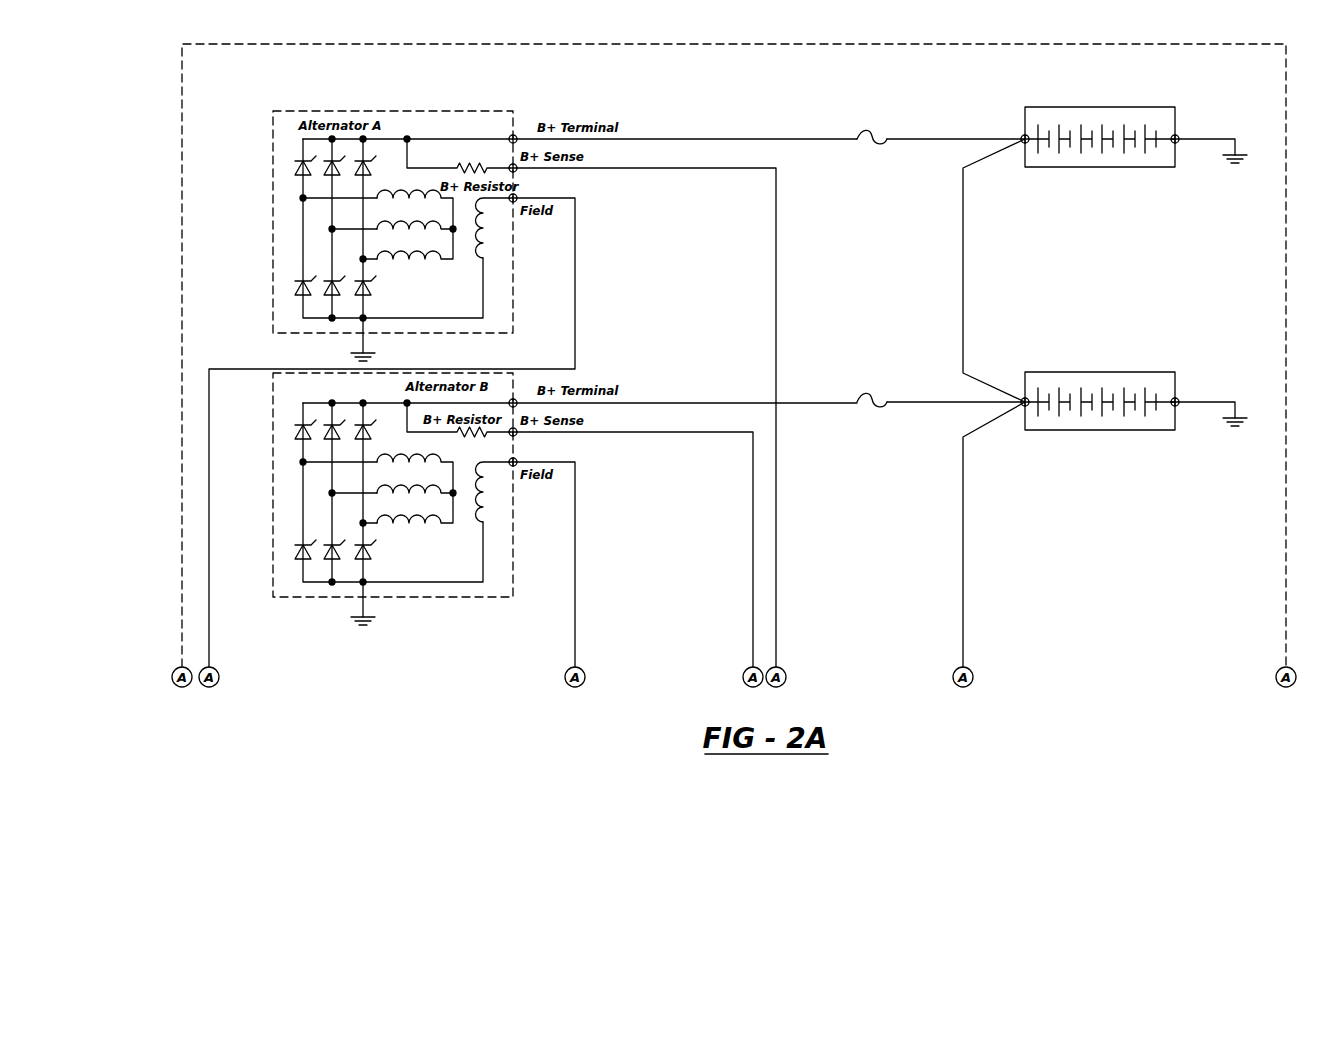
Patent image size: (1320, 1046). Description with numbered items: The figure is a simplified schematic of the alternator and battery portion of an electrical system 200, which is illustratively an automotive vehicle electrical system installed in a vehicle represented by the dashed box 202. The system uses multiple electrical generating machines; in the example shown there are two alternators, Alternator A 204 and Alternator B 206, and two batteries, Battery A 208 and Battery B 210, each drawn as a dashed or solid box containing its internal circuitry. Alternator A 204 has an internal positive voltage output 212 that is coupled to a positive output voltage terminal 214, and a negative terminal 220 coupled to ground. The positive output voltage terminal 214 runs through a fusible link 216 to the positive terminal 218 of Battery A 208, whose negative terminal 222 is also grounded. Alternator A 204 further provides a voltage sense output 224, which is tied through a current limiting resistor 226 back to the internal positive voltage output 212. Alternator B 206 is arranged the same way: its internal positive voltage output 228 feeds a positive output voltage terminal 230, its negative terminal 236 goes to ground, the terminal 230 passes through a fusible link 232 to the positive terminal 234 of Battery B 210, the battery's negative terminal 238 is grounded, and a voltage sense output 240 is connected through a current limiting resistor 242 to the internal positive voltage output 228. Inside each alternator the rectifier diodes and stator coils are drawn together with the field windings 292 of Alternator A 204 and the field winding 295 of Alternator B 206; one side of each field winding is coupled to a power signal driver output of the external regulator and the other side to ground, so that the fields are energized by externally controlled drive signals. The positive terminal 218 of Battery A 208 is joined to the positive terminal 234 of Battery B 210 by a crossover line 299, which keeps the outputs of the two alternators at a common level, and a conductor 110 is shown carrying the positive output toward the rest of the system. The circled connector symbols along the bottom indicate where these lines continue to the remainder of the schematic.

The B+ conductor 110 is at (690, 402).
The electrical system 200 is at (1218, 266).
The dashed box 202 is at (1286, 590).
The Alternator A 204 is at (493, 108).
The Alternator B 206 is at (273, 540).
The Battery A 208 is at (1027, 170).
The Battery B 210 is at (1027, 433).
The internal positive voltage output 212 is at (407, 139).
The positive output voltage terminal 214 is at (517, 137).
The fusible link 216 is at (866, 132).
The positive terminal 218 is at (1021, 137).
The negative terminal 220 is at (363, 320).
The negative terminal 222 is at (1177, 137).
The voltage sense output 224 is at (517, 170).
The current limiting resistor 226 is at (457, 168).
The internal positive voltage output 228 is at (365, 395).
The positive output voltage terminal 230 is at (683, 380).
The fusible link 232 is at (866, 395).
The positive terminal 234 is at (1021, 400).
The negative terminal 236 is at (396, 605).
The negative terminal 238 is at (1177, 400).
The voltage sense output 240 is at (631, 547).
The current limiting resistor 242 is at (458, 480).
The field windings 292 is at (483, 250).
The field winding 295 is at (519, 506).
The crossover line 299 is at (963, 275).